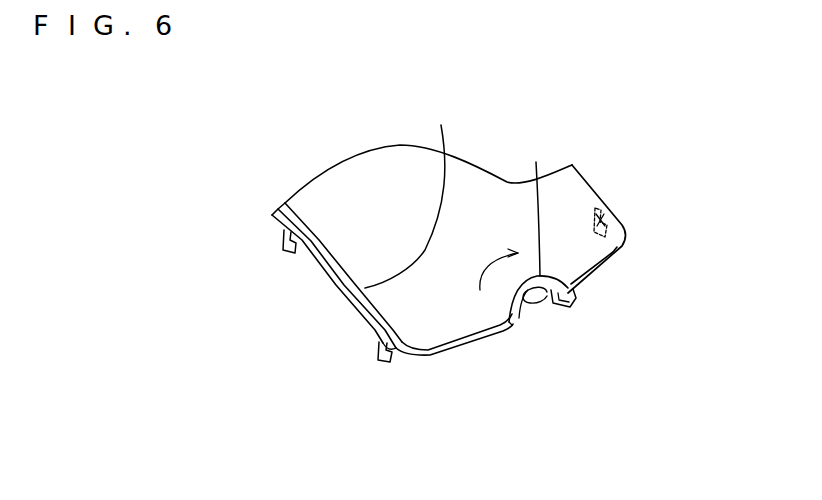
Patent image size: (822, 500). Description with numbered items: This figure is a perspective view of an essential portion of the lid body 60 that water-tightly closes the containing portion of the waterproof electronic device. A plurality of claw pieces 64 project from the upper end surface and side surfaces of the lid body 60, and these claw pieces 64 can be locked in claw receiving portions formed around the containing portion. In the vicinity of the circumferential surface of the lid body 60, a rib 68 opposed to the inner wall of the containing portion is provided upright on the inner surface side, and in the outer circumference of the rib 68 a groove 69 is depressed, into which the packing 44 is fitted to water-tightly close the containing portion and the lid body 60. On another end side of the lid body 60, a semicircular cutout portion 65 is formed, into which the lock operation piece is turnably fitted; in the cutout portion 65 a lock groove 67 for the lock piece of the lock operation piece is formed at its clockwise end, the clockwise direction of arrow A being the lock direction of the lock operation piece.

The lid body 60 is at (383, 182).
The groove 69 is at (441, 125).
The cutout portion 65 is at (536, 162).
The lock groove 67 is at (542, 303).
The claw pieces 64 is at (283, 233).
The packing 44 is at (320, 260).
The rib 68 is at (405, 355).
The arrow A is at (505, 283).